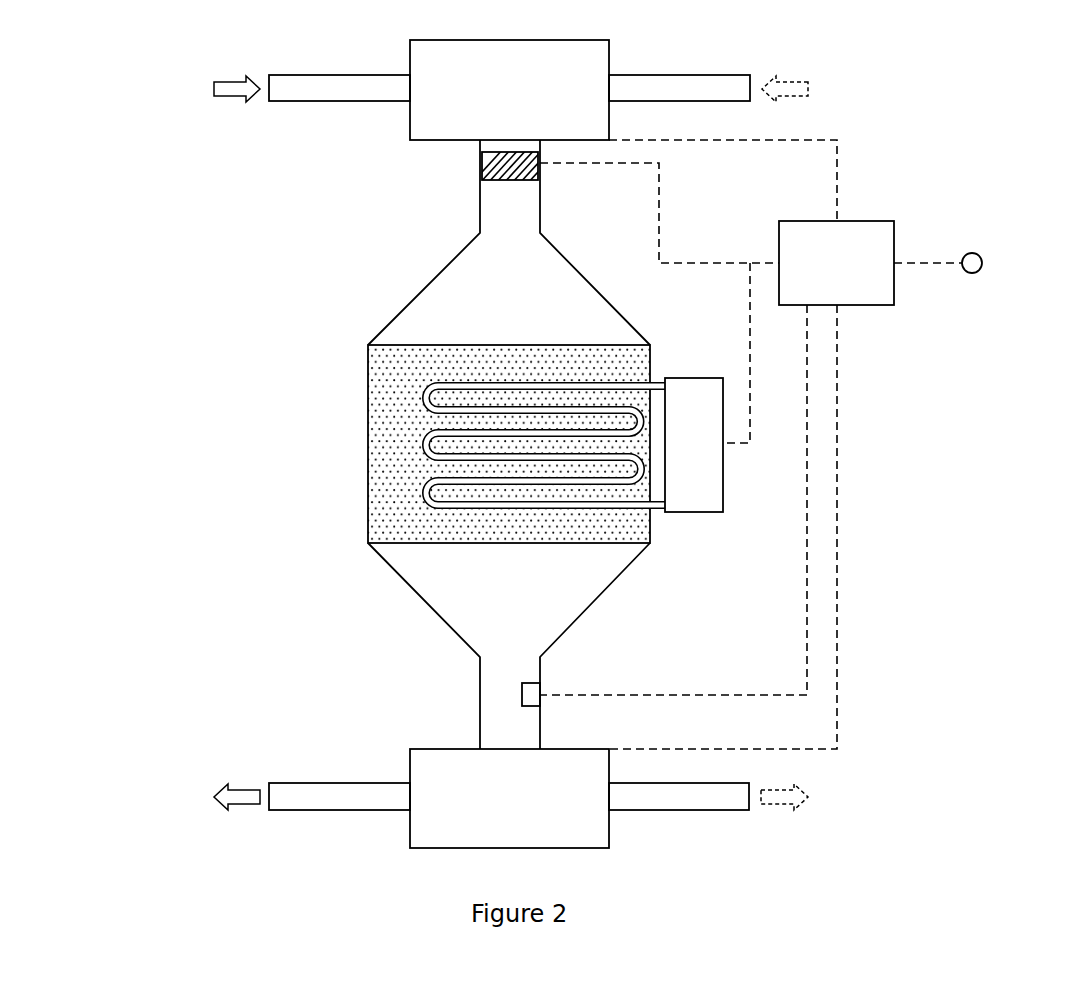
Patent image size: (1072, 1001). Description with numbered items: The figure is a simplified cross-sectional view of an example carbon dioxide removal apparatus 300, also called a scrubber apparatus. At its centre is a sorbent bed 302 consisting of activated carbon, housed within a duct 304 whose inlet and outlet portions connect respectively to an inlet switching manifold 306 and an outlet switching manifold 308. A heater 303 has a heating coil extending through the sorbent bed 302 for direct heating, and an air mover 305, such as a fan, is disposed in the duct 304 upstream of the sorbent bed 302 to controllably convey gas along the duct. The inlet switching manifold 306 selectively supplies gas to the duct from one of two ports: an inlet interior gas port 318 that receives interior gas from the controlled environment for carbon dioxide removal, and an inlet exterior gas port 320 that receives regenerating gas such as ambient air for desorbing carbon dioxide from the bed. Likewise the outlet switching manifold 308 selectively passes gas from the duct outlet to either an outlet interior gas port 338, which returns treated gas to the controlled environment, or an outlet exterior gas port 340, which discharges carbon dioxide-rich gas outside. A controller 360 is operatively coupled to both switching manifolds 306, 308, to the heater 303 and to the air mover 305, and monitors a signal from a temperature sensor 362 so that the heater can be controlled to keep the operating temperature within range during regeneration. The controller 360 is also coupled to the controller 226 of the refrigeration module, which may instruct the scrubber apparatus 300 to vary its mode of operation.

The carbon dioxide removal apparatus 300 is at (77, 55).
The sorbent bed 302 is at (431, 444).
The heater 303 is at (577, 493).
The duct 304 is at (491, 242).
The air mover 305 is at (453, 166).
The inlet switching manifold 306 is at (532, 105).
The outlet switching manifold 308 is at (532, 813).
The inlet interior gas port 318 is at (708, 57).
The inlet exterior gas port 320 is at (312, 57).
The outlet interior gas port 338 is at (708, 833).
The outlet exterior gas port 340 is at (312, 835).
The controller 360 is at (751, 444).
The temperature sensor 362 is at (509, 646).
The controller 226 is at (1002, 299).